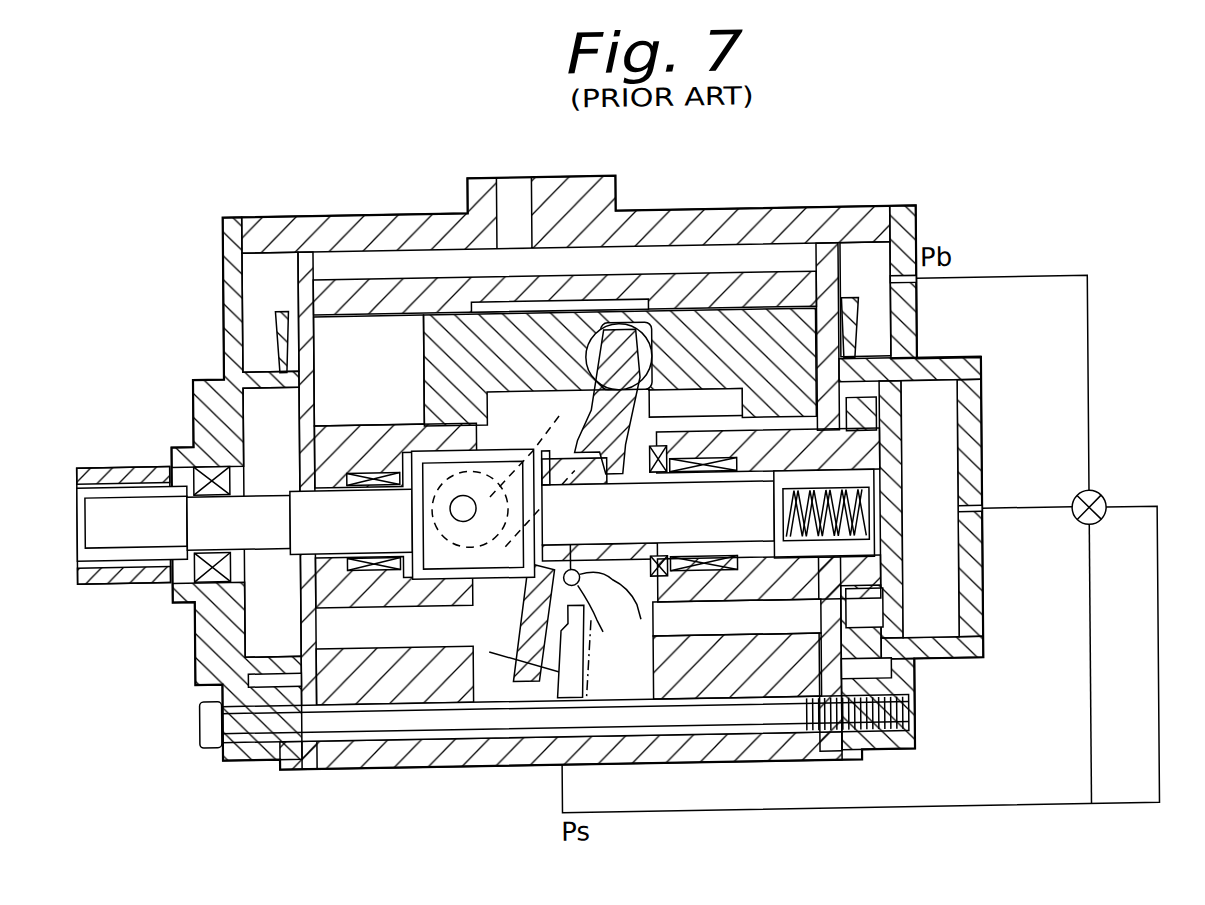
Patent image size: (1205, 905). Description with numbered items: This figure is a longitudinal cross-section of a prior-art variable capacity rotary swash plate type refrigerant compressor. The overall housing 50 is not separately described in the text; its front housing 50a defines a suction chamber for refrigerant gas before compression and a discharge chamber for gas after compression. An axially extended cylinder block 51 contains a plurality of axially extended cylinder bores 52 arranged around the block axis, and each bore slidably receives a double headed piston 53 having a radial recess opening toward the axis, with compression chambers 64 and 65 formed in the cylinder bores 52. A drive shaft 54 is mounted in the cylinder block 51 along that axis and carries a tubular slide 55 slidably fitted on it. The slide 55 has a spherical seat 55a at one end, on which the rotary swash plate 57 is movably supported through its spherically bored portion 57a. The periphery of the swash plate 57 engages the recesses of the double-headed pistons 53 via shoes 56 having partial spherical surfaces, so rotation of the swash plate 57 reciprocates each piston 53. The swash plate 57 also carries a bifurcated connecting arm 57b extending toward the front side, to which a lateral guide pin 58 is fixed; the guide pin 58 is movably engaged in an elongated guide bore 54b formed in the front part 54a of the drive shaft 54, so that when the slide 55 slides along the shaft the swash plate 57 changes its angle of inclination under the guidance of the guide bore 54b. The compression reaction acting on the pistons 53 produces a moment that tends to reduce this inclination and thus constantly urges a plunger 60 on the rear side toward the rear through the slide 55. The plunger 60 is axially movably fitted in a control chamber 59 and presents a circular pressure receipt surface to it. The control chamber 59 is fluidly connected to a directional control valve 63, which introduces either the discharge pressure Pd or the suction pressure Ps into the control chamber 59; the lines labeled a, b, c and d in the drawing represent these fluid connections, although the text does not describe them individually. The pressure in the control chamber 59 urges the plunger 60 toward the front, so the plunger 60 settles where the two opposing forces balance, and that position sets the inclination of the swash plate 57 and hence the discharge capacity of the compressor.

The housing 50 is at (940, 370).
The front housing 50a is at (202, 374).
The cylinder block 51 is at (693, 218).
The cylinder bores 52 is at (362, 305).
The double headed piston 53 is at (425, 352).
The drive shaft 54 is at (122, 503).
The front part of the drive shaft 54a is at (273, 540).
The elongated guide bore 54b is at (473, 514).
The tubular slide 55 is at (627, 484).
The spherical seat 55a is at (658, 618).
The shoes 56 is at (655, 393).
The rotary swash plate 57 is at (499, 700).
The spherically bored portion 57a is at (602, 618).
The bifurcated connecting arm 57b is at (556, 438).
The guide pin 58 is at (453, 500).
The control chamber 59 is at (915, 459).
The plunger 60 is at (900, 565).
The directional control valve 63 is at (1104, 505).
The compression chamber 64 is at (846, 324).
The compression chamber 65 is at (378, 403).
The line a is at (1088, 603).
The line b is at (1021, 510).
The line c is at (1013, 284).
The line d is at (1160, 620).